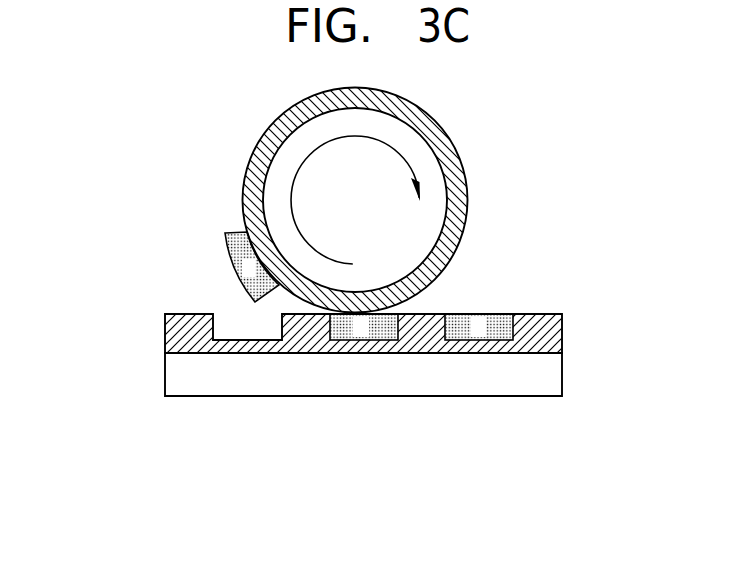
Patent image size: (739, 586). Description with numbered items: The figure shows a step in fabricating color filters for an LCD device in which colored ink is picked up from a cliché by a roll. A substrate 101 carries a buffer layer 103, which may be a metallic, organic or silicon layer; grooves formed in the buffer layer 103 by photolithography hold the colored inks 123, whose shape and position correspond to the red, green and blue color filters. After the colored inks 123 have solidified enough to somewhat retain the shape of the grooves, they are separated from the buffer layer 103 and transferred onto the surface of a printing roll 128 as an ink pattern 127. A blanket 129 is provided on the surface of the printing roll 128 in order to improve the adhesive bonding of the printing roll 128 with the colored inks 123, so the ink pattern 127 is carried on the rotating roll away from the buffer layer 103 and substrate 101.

The substrate 101 is at (555, 375).
The buffer layer 103 is at (562, 328).
The colored ink 123 is at (492, 322).
The ink pattern 127 is at (369, 342).
The printing roll 128 is at (447, 207).
The blanket 129 is at (458, 152).